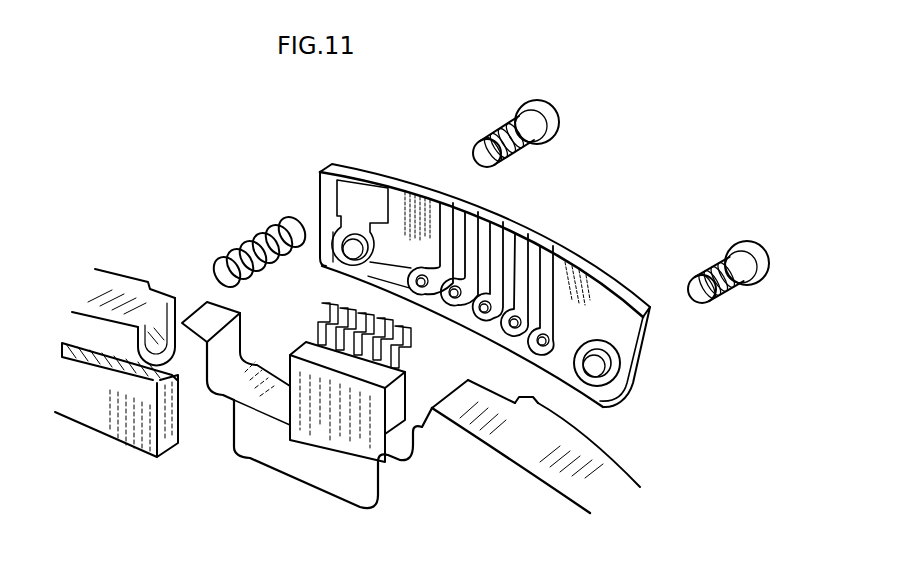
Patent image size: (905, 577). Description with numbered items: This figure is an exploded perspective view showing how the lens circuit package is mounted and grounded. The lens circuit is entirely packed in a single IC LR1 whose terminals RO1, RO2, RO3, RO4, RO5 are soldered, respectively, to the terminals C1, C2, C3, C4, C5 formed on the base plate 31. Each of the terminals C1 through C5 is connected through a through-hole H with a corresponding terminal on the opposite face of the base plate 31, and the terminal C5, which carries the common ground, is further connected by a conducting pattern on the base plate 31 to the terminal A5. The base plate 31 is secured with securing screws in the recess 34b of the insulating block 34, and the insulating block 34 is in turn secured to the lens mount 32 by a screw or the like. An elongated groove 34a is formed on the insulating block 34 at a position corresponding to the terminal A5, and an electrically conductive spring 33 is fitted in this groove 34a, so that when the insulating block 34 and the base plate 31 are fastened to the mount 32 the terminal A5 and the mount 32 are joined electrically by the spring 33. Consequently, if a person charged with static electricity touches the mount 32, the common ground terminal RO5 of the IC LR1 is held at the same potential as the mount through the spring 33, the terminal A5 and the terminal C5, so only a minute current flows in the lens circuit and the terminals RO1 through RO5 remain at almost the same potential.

The base plate 31 is at (597, 288).
The terminal A5 is at (364, 197).
The terminal C1 is at (548, 262).
The terminal C2 is at (524, 243).
The terminal C3 is at (496, 240).
The terminal C4 is at (473, 230).
The terminal C5 is at (444, 203).
The through-hole H is at (538, 348).
The electrically conductive spring 33 is at (239, 238).
The lens mount 32 is at (188, 410).
The elongated groove 34a is at (153, 333).
The IC LR1 is at (345, 432).
The terminal RO1 is at (400, 352).
The terminal RO2 is at (380, 318).
The terminal RO3 is at (348, 322).
The terminal RO4 is at (340, 300).
The common ground terminal RO5 is at (317, 305).
The insulating block 34 is at (526, 448).
The recess 34b is at (480, 433).